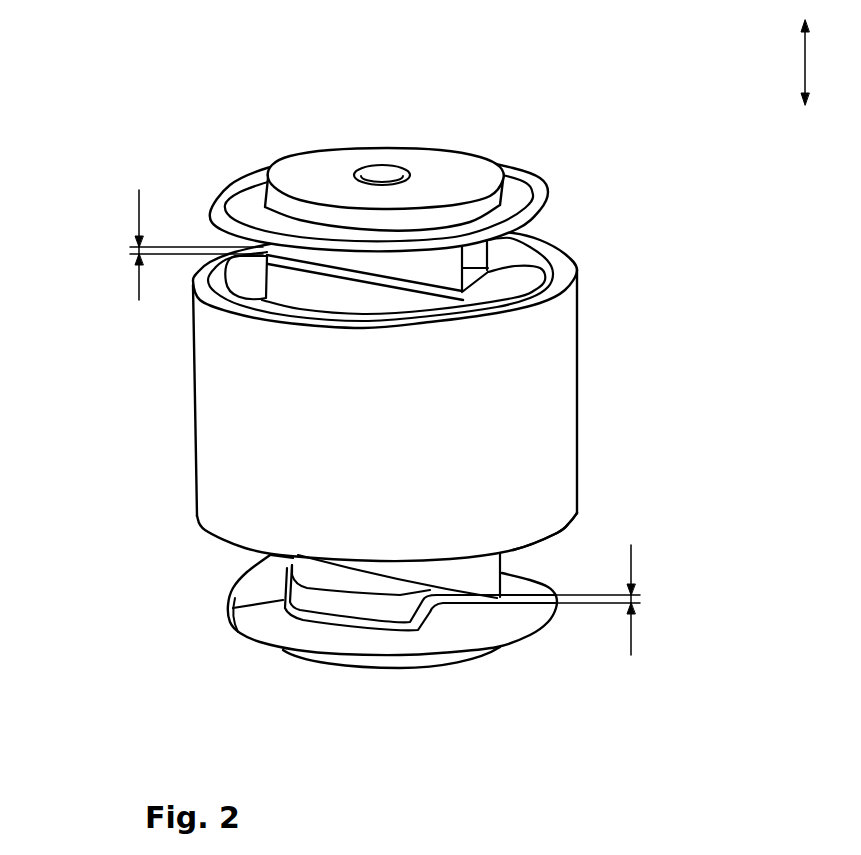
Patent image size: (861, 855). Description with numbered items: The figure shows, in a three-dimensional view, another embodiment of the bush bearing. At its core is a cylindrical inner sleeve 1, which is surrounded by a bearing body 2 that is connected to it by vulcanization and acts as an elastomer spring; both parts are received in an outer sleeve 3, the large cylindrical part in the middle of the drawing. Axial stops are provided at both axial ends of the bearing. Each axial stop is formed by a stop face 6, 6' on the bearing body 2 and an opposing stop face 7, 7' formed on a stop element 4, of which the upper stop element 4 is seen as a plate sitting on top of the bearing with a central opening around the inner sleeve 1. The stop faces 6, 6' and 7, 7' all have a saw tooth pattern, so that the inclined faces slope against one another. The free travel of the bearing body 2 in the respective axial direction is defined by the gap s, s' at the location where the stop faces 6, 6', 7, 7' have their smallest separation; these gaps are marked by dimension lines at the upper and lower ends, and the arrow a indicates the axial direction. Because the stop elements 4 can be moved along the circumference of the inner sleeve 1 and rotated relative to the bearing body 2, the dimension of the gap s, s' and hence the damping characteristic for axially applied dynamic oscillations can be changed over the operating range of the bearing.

The inner sleeve 1 is at (465, 258).
The bearing body 2 is at (312, 299).
The outer sleeve 3 is at (513, 438).
The stop element 4 is at (514, 200).
The stop face 6 is at (437, 279).
The stop face 6' is at (602, 514).
The stop face 7 is at (332, 183).
The stop face 7' is at (339, 616).
The gap s is at (145, 240).
The gap s' is at (643, 594).
The axial direction a is at (793, 62).